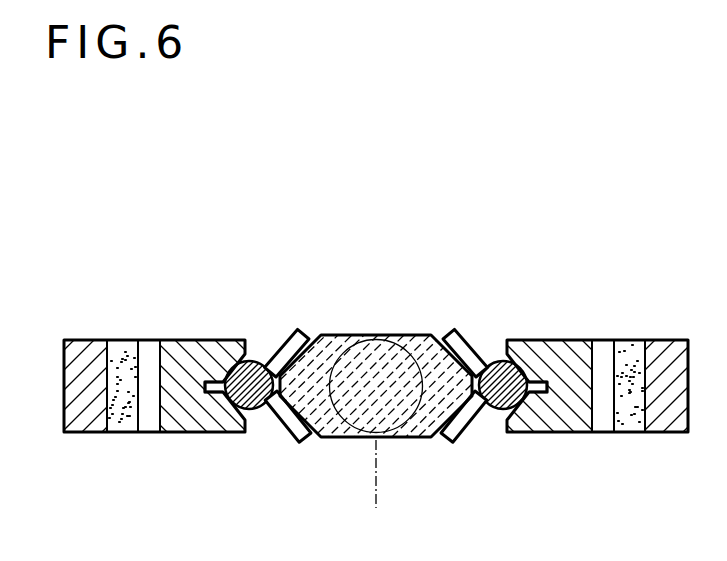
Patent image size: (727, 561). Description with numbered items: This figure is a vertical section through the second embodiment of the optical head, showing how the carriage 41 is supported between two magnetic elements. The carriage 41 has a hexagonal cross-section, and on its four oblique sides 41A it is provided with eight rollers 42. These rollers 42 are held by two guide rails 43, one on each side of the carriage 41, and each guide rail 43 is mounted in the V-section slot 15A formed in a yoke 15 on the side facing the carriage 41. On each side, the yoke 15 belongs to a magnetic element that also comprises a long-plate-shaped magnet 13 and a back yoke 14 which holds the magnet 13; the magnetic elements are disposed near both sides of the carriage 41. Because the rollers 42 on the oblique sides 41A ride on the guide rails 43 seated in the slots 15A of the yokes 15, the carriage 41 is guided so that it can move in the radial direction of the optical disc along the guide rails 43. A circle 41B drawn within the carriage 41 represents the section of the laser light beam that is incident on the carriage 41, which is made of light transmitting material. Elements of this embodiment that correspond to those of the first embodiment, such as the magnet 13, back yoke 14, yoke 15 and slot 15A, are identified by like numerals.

The back yoke 14 is at (78, 345).
The magnet 13 is at (118, 347).
The yoke 15 is at (188, 348).
The V-section slot 15A is at (228, 368).
The guide rail 43 is at (252, 362).
The roller 42 is at (297, 328).
The carriage 41 is at (376, 334).
The oblique side 41A is at (324, 338).
The circle representing laser light beam section 41B is at (376, 491).